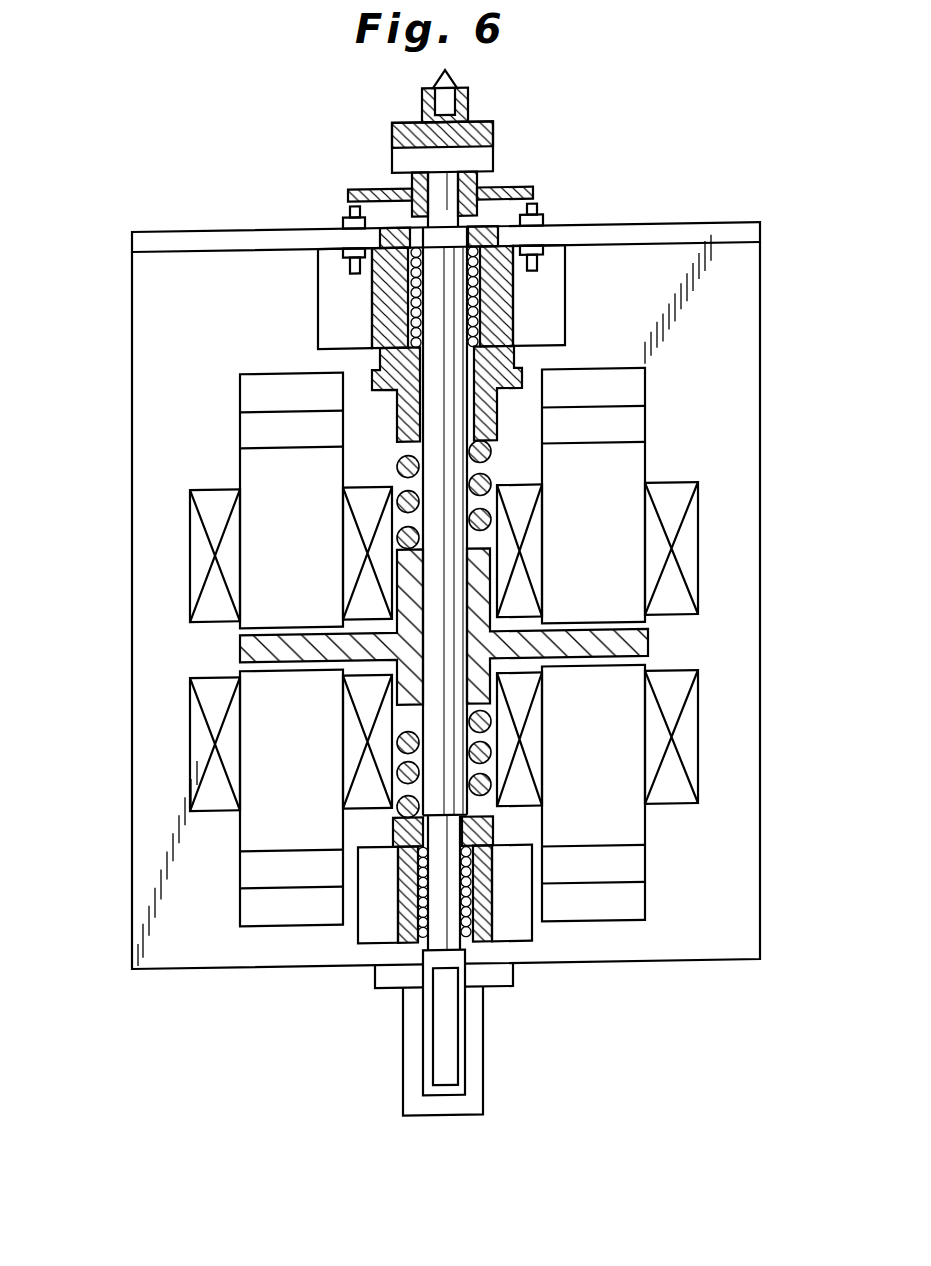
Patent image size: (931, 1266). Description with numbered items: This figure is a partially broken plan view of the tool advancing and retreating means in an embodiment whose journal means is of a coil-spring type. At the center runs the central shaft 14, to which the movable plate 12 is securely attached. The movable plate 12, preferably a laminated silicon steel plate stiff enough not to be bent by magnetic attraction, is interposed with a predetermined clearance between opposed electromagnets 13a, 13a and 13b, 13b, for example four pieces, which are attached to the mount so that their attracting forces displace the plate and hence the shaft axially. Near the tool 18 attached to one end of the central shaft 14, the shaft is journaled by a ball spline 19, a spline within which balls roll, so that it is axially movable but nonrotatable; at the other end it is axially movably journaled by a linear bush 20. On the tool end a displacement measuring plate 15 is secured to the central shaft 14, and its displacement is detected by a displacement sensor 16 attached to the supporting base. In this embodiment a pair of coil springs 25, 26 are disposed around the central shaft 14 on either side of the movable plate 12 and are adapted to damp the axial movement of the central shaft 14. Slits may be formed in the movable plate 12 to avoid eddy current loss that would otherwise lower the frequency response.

The movable plate 12 is at (243, 644).
The electromagnets 13a is at (193, 538).
The electromagnets 13b is at (203, 739).
The central shaft 14 is at (452, 417).
The displacement measuring plate 15 is at (508, 194).
The displacement sensor 16 is at (540, 214).
The tool 18 is at (422, 100).
The ball spline 19 is at (400, 296).
The linear bush 20 is at (398, 915).
The coil spring 25 is at (397, 464).
The coil spring 26 is at (395, 822).